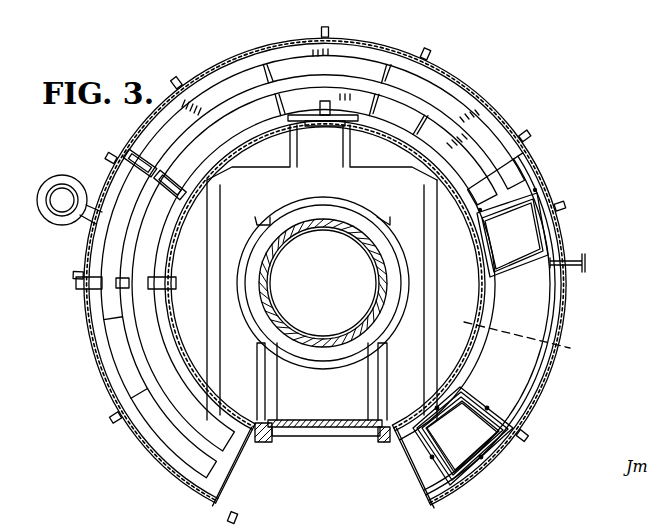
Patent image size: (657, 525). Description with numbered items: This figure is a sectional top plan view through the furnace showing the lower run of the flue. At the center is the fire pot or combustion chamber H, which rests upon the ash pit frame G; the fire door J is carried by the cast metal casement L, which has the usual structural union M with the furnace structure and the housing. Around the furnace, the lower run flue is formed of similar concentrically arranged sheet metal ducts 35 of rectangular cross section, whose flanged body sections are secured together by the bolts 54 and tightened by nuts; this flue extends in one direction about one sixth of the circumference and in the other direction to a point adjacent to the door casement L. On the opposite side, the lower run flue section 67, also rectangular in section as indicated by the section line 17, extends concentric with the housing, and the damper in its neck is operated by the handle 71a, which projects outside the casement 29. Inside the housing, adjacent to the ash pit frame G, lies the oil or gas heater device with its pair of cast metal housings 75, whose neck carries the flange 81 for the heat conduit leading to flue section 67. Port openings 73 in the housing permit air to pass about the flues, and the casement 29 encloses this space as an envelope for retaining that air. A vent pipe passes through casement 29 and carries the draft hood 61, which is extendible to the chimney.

The casement 29 is at (482, 95).
The sheet metal ducts 35 is at (193, 100).
The bolts 54 is at (152, 157).
The draft hood 61 is at (45, 212).
The port openings 73 is at (176, 222).
The cast metal housings 75 is at (437, 240).
The flange 81 is at (363, 126).
The handle 71a is at (587, 254).
The lower run flue section 67 is at (548, 316).
The section line 17 is at (518, 341).
The fire pot H is at (389, 293).
The cast metal casement L is at (267, 440).
The ash pit frame G is at (270, 390).
The structural union M is at (312, 405).
The fire door J is at (378, 432).